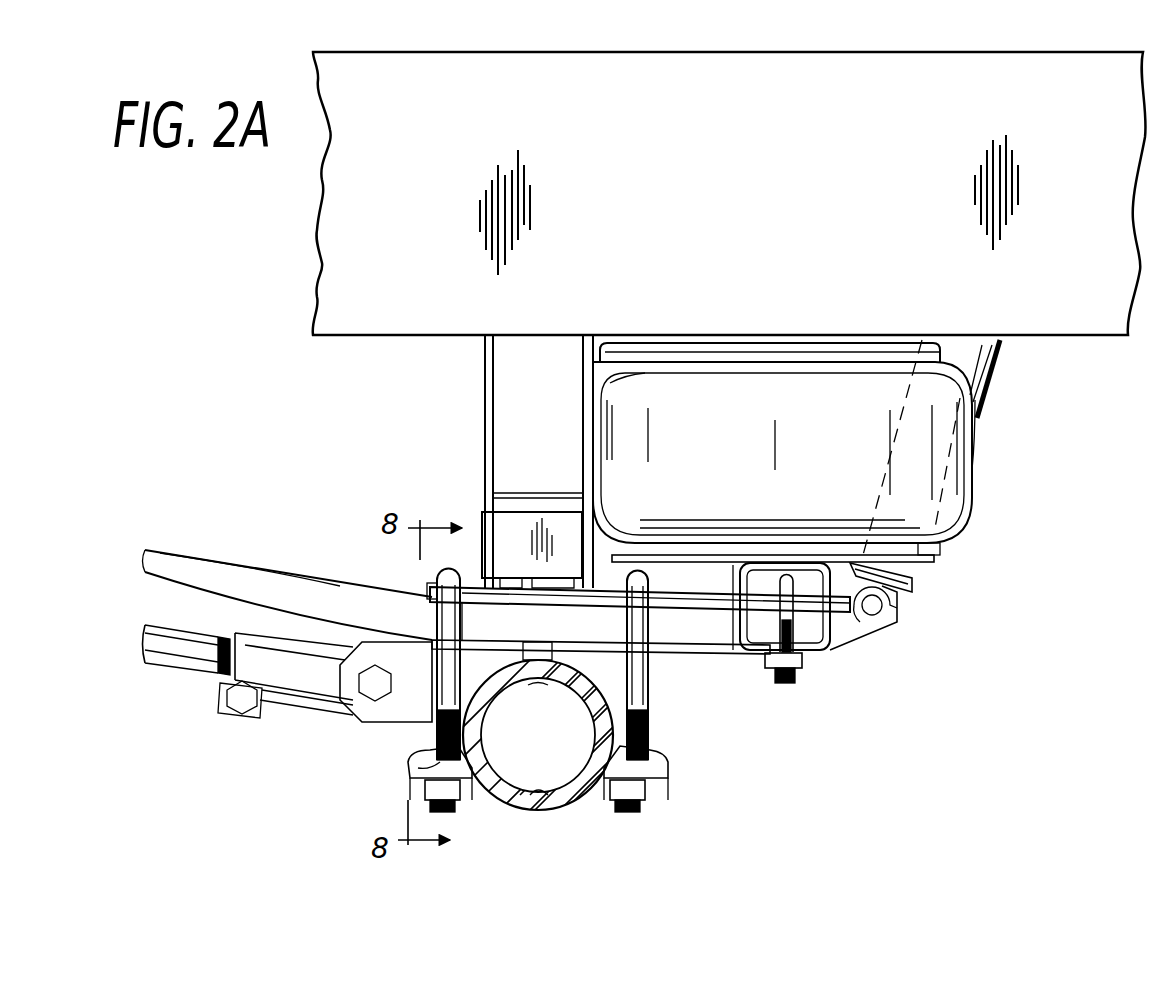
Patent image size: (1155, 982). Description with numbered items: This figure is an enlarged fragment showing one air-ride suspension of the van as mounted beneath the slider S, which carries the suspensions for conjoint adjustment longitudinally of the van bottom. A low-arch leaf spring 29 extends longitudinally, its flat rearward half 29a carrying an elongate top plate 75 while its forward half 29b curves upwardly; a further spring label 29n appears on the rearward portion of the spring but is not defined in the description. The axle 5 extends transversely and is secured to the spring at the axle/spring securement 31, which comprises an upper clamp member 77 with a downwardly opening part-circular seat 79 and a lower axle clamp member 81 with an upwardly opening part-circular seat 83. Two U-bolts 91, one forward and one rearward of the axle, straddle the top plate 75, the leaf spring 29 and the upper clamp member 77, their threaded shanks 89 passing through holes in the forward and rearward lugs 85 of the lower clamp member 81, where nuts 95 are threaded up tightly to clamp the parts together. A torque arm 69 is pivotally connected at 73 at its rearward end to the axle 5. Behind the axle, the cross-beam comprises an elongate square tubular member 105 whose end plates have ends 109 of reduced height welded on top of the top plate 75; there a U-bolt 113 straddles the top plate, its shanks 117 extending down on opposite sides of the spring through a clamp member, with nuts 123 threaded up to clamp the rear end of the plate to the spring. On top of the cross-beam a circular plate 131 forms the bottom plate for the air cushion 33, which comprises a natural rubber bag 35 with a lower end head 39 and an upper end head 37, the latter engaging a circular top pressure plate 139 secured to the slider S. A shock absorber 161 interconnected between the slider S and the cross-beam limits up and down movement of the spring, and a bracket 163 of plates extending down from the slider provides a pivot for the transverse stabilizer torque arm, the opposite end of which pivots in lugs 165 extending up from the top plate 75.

The slider S is at (983, 52).
The circular plate 139 is at (880, 343).
The shock absorbers 161 is at (1003, 348).
The upper end head 37 is at (678, 350).
The air cushion 33 is at (840, 427).
The natural rubber bag 35 is at (975, 455).
The bracket 163 is at (483, 400).
The lugs 165 is at (482, 530).
The lower end head 39 is at (683, 540).
The U-bolt 113 is at (780, 575).
The ends of reduced height 109 is at (838, 578).
The circular plate 131 is at (937, 562).
The forward half 29b is at (180, 550).
The leaf spring 29 is at (268, 575).
The U-bolts 91 is at (430, 574).
The elongate plate 75 is at (428, 592).
The part-circular seat 79 is at (525, 690).
The torque arm 69 is at (145, 663).
The upper clamp member 77 is at (303, 718).
The pivotal connection 73 is at (348, 722).
The lugs 85 is at (415, 762).
The nuts 95 is at (420, 785).
The axle/spring securement 31 is at (395, 800).
The threaded shanks 89 is at (445, 812).
The axle 5 is at (550, 810).
The part-circular seat 83 is at (558, 805).
The lower axle clamp member 81 is at (668, 763).
The rearward half 29a is at (715, 648).
The elongate member 105 is at (737, 652).
The shanks 117 is at (782, 685).
The nuts 123 is at (805, 665).
The rail end 29n is at (835, 650).